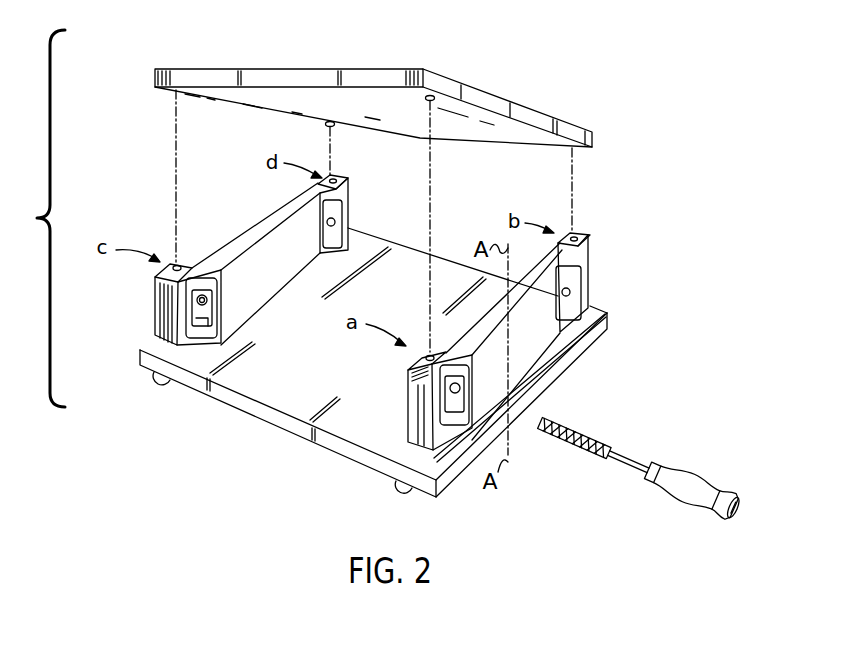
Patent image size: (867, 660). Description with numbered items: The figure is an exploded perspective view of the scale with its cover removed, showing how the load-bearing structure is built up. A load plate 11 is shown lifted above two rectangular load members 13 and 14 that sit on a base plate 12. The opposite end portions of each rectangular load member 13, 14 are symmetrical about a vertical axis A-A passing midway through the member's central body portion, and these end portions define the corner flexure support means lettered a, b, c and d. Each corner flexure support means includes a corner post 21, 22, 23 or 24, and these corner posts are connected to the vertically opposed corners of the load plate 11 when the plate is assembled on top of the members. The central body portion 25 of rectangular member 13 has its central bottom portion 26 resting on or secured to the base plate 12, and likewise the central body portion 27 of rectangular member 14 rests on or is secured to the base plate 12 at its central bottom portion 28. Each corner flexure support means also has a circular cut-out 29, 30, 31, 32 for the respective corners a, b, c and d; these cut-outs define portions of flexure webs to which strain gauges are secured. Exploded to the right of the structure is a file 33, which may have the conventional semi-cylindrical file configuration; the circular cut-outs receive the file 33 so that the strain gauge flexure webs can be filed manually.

The load plate 11 is at (304, 77).
The base plate 12 is at (270, 417).
The rectangular load member 13 is at (407, 437).
The rectangular load member 14 is at (160, 305).
The corner post 21 is at (410, 358).
The corner post 22 is at (582, 233).
The corner post 23 is at (182, 264).
The corner post 24 is at (343, 178).
The central body portion 25 is at (513, 333).
The central bottom portion 26 is at (523, 372).
The central body portion 27 is at (256, 264).
The central bottom portion 28 is at (268, 295).
The circular cut-out 29 is at (457, 387).
The circular cut-out 30 is at (568, 297).
The circular cut-out 31 is at (205, 303).
The circular cut-out 32 is at (320, 222).
The file 33 is at (592, 455).